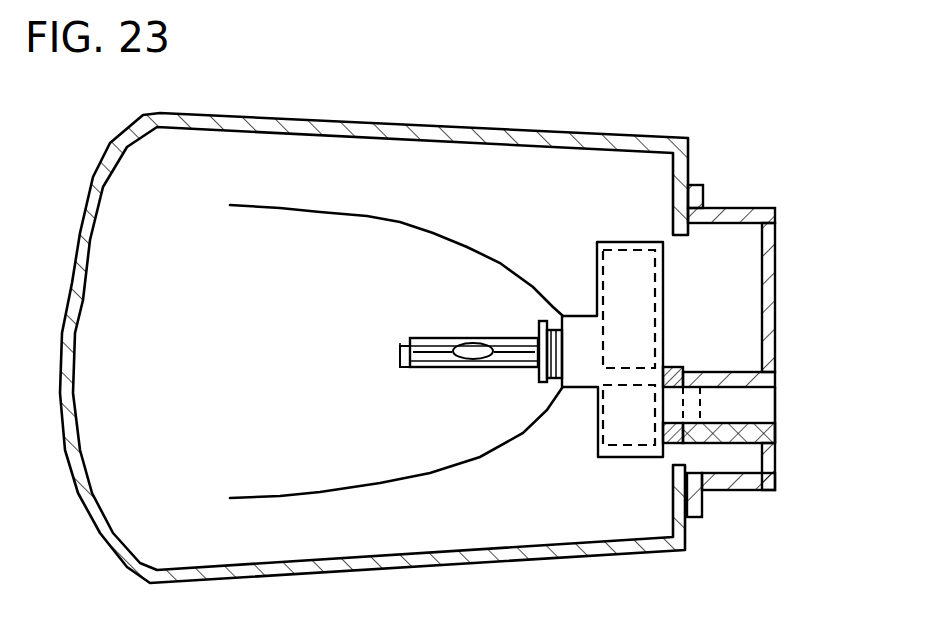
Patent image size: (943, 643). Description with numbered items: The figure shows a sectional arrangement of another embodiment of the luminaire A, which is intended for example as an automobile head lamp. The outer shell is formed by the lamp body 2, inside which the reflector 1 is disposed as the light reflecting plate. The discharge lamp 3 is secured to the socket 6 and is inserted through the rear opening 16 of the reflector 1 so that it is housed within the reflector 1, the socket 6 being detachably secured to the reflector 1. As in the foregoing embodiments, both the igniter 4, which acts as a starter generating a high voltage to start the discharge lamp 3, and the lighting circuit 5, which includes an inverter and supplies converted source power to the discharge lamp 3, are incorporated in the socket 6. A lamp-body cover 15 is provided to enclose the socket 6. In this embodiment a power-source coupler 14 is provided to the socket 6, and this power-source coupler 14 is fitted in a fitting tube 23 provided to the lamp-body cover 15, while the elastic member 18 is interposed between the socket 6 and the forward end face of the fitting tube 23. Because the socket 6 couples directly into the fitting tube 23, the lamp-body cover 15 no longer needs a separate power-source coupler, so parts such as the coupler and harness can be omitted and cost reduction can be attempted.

The reflector 1 is at (368, 215).
The lamp body 2 is at (485, 138).
The discharge lamp 3 is at (460, 337).
The igniter 4 is at (628, 446).
The lighting circuit 5 is at (603, 278).
The socket 6 is at (595, 458).
The power-source coupler 14 is at (708, 387).
The lamp-body cover 15 is at (773, 327).
The rear opening 16 is at (560, 388).
The elastic member 18 is at (675, 443).
The fitting tube 23 is at (762, 443).
The luminaire A is at (387, 120).